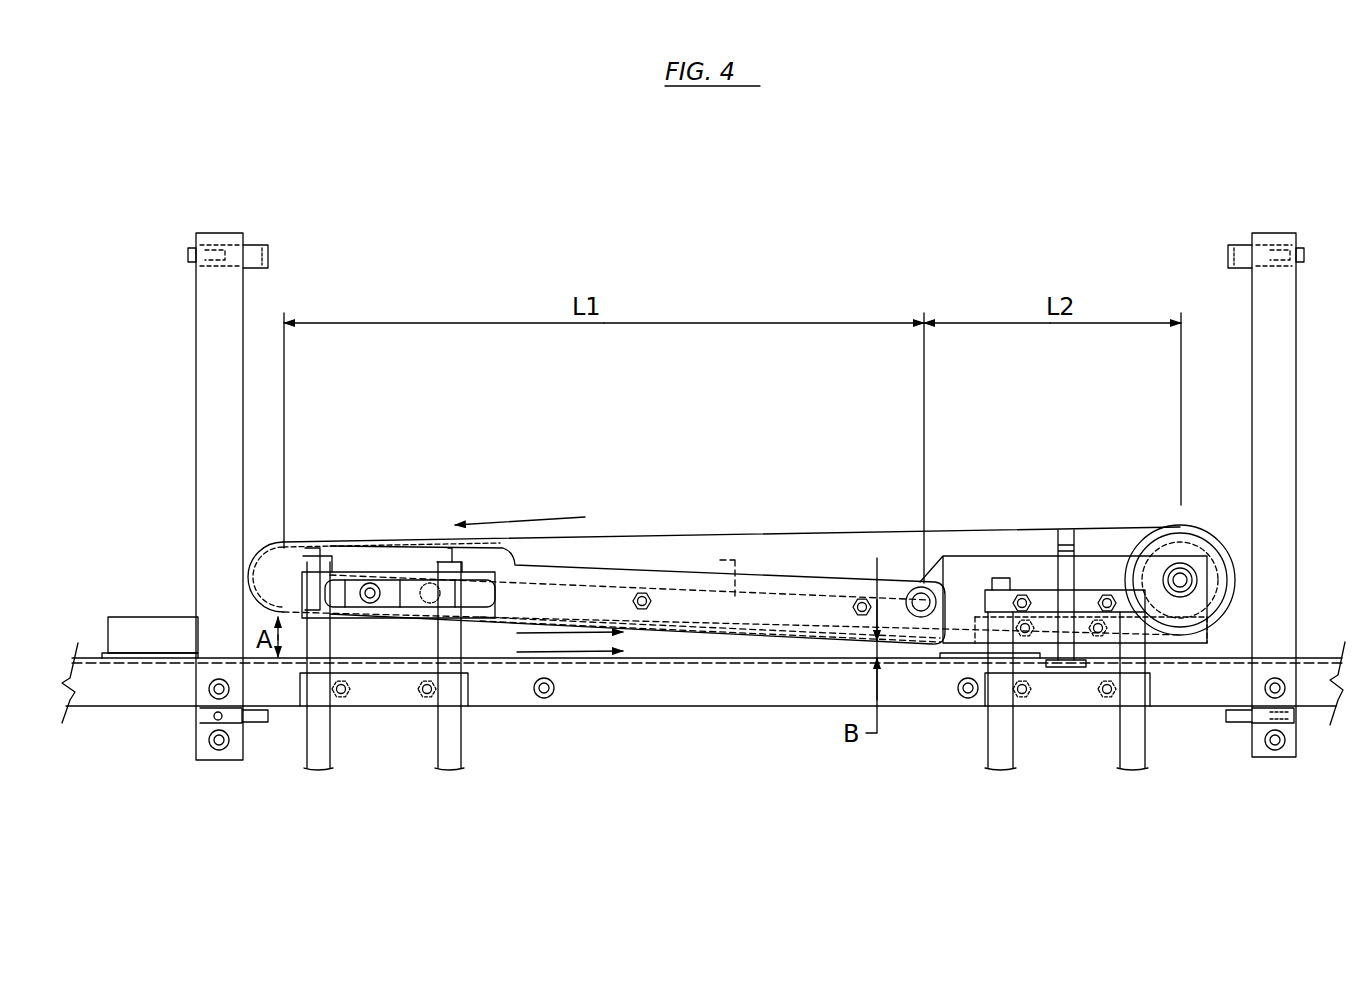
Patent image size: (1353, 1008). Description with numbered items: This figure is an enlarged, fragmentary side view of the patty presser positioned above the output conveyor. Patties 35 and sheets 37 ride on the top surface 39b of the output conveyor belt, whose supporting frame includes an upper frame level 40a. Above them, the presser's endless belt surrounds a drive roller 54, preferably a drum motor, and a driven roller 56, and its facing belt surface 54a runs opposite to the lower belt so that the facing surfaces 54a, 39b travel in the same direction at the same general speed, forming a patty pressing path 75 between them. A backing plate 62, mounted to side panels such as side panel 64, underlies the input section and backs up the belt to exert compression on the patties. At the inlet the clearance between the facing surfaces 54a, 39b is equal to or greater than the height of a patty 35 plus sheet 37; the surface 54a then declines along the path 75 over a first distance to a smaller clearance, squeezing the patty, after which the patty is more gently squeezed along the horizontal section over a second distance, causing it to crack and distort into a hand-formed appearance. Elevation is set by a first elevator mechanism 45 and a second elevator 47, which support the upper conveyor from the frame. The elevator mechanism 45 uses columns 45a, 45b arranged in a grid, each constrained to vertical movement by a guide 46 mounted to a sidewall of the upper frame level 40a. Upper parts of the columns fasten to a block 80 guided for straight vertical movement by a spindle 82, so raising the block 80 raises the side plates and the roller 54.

The patty 35 is at (132, 630).
The sheet 37 is at (140, 655).
The top surface of the circulating belt 39b is at (722, 660).
The upper frame level 40a is at (746, 700).
The first elevator mechanism 45 is at (754, 723).
The column 45a is at (331, 752).
The column 45b is at (441, 757).
The guide 46 is at (461, 707).
The second elevator 47 is at (1152, 785).
The drive roller 54 is at (1148, 558).
The facing belt surface 54a is at (694, 802).
The driven roller 56 is at (303, 543).
The backing plate 62 is at (665, 800).
The side panel 64 is at (603, 568).
The patty pressing path 75 is at (385, 650).
The block 80 is at (1044, 558).
The spindle 82 is at (1084, 558).